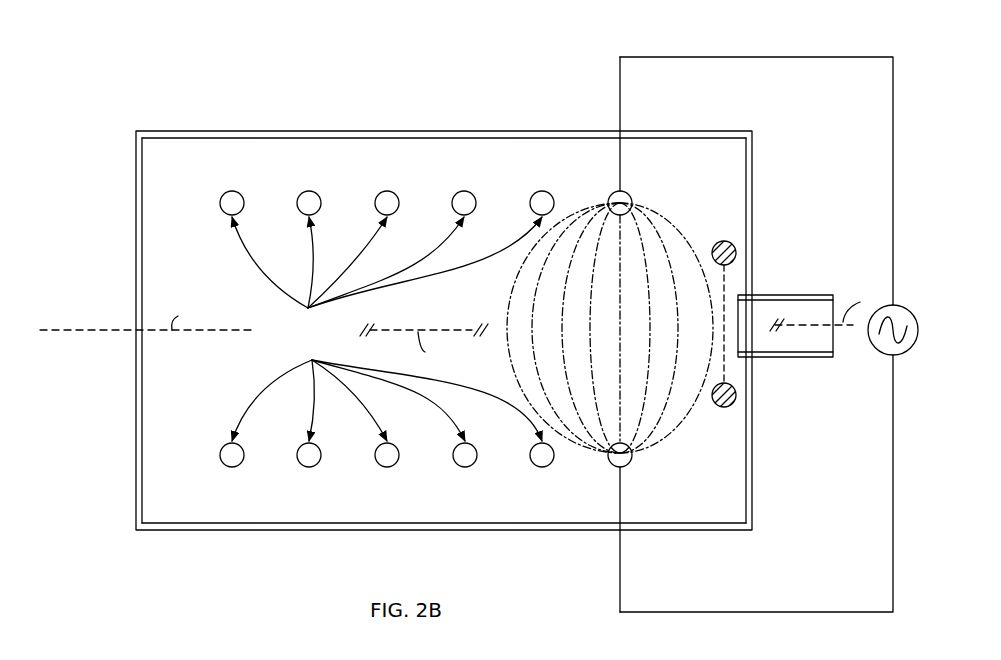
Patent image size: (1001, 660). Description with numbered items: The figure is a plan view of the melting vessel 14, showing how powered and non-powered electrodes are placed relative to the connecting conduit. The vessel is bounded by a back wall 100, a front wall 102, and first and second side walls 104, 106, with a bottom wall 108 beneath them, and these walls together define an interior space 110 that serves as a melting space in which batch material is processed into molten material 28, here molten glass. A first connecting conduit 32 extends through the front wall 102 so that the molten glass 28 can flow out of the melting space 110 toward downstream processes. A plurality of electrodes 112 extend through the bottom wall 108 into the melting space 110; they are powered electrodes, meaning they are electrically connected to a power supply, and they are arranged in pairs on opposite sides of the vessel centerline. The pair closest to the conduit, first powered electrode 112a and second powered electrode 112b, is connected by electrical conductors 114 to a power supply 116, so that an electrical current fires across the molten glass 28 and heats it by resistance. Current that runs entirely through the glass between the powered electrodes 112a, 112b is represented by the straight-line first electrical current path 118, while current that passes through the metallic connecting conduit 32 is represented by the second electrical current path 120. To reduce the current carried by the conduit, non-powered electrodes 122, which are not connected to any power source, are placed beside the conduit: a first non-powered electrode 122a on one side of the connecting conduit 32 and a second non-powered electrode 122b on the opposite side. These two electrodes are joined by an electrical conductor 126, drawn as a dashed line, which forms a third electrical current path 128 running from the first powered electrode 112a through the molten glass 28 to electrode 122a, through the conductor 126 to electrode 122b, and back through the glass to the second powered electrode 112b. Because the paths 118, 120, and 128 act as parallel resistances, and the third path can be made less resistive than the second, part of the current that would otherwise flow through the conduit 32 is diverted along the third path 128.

The melting vessel 14 is at (528, 88).
The molten material 28 is at (212, 408).
The first connecting conduit 32 is at (813, 296).
The back wall 100 is at (136, 187).
The front wall 102 is at (752, 163).
The first side wall 104 is at (209, 131).
The second side wall 106 is at (245, 530).
The bottom wall 108 is at (350, 165).
The interior space 110 is at (173, 252).
The plurality of electrodes 112 is at (387, 329).
The first powered electrode 112a is at (608, 200).
The second powered electrode 112b is at (608, 456).
The electrical conductors 114 is at (697, 57).
The power supply 116 is at (910, 315).
The first electrical current path 118 is at (615, 350).
The second electrical current path 120 is at (737, 280).
The non-powered electrodes 122 is at (753, 324).
The first non-powered electrode 122a is at (723, 241).
The second non-powered electrode 122b is at (725, 407).
The electrical conductor 126 is at (725, 330).
The third electrical current path 128 is at (660, 200).